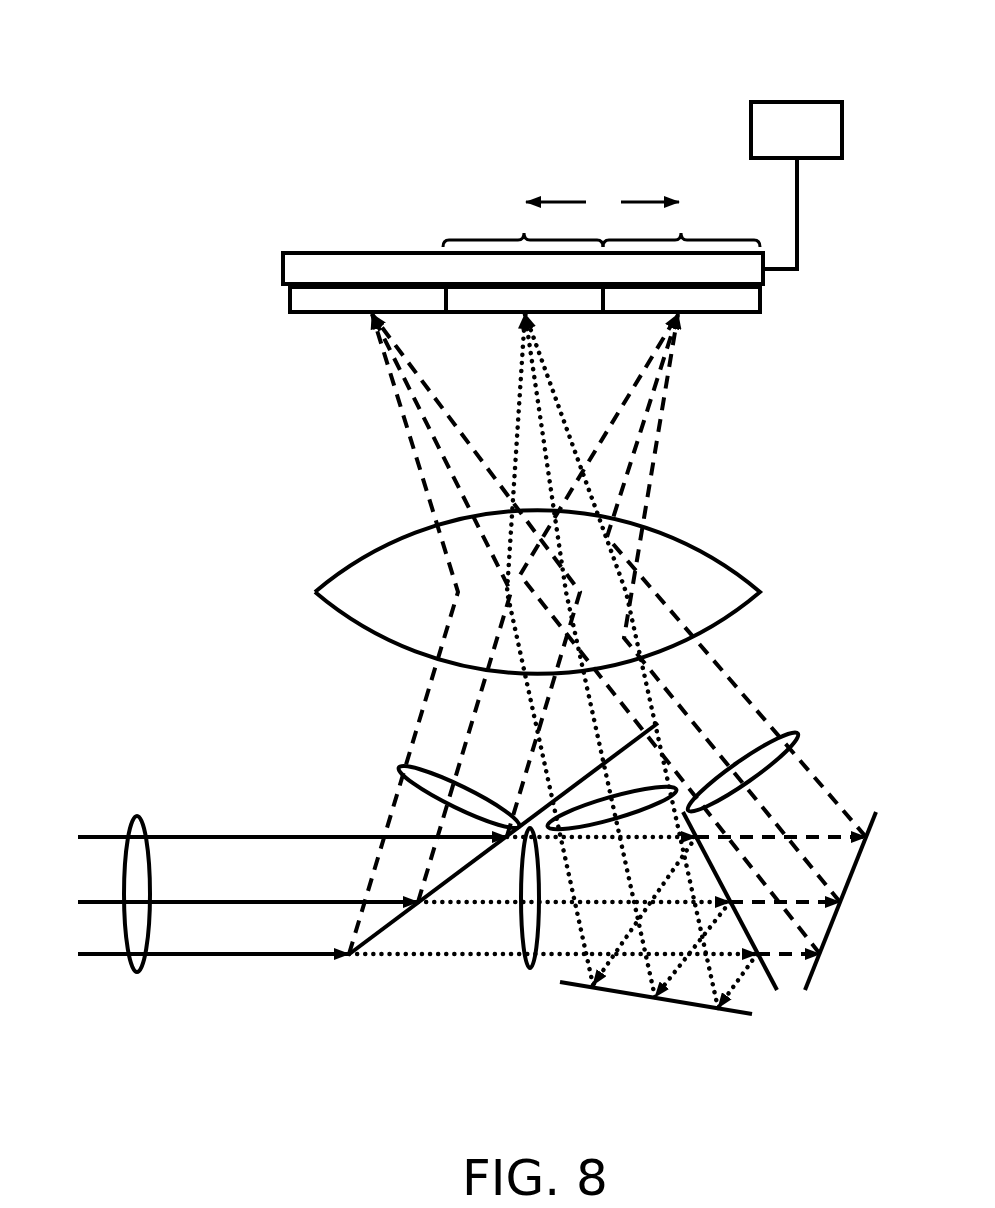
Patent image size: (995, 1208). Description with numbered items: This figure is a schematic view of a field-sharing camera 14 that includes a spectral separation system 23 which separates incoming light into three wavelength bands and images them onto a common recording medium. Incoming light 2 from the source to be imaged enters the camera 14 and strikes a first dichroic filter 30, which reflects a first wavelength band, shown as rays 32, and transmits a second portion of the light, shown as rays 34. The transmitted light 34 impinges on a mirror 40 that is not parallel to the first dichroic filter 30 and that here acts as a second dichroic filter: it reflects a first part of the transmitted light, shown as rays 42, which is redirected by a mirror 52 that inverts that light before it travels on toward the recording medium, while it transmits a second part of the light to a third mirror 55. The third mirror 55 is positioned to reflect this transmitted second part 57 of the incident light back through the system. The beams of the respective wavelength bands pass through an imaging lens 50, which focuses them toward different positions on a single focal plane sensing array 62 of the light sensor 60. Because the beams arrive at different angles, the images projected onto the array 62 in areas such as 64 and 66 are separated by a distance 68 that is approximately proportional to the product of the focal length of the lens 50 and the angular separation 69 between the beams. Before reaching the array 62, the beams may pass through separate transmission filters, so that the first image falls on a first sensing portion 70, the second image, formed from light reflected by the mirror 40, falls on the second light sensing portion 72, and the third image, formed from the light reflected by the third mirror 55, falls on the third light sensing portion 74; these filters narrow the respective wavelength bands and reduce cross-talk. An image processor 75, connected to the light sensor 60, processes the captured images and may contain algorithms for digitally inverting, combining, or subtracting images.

The incoming light 2 is at (137, 817).
The camera 14 is at (247, 450).
The spectral separation system 23 is at (829, 660).
The first dichroic filter 30 is at (348, 955).
The rays of first wavelength band 32 is at (400, 770).
The transmitted light of second wavelength band 34 is at (528, 967).
The mirror (second dichroic filter) 40 is at (768, 990).
The light reflected from the mirror 42 is at (638, 792).
The imaging lens 50 is at (760, 592).
The mirror 52 is at (632, 995).
The third mirror 55 is at (835, 923).
The transmitted second part of incident light 57 is at (798, 733).
The light sensor 60 is at (784, 289).
The focal plane sensing array 62 is at (283, 269).
The image area 64 is at (681, 233).
The image area 66 is at (524, 233).
The separation distance 68 is at (602, 202).
The angular separation 69 is at (637, 372).
The transmission filter 70 is at (720, 312).
The transmission filter (second light sensing portion) 72 is at (493, 312).
The third light sensing portion 74 is at (335, 312).
The image processor 75 is at (797, 102).